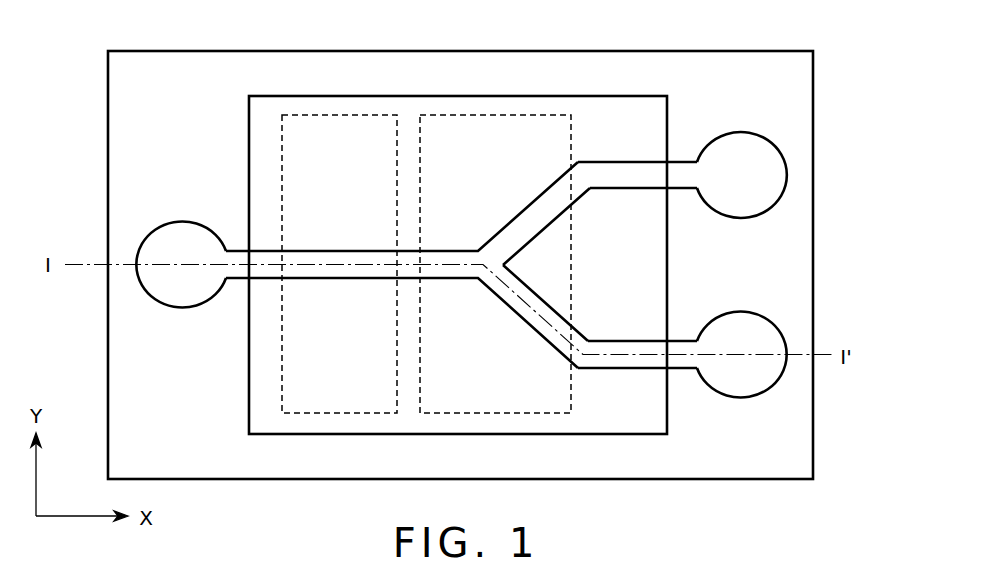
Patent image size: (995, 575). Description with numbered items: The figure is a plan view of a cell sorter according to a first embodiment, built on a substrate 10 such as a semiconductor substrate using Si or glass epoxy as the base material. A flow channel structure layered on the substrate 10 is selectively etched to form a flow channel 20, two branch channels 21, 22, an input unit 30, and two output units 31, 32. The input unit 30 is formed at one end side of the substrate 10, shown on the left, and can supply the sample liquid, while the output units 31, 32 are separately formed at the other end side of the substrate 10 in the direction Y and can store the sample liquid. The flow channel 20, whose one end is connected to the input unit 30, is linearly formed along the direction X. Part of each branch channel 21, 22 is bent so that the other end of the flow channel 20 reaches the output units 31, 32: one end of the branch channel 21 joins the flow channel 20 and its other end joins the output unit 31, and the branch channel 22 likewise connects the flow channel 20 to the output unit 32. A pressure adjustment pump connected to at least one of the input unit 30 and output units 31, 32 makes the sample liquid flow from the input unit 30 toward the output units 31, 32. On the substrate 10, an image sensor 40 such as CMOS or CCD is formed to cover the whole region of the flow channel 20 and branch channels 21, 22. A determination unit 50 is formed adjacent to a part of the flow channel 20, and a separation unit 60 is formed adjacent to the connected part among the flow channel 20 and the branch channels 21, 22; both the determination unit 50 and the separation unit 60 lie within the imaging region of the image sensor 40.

The substrate 10 is at (813, 445).
The flow channel 20 is at (262, 250).
The branch channel 21 is at (626, 162).
The branch channel 22 is at (626, 372).
The input unit 30 is at (168, 222).
The output unit 31 is at (751, 133).
The output unit 32 is at (740, 398).
The image sensor 40 is at (625, 96).
The determination unit 50 is at (372, 113).
The separation unit 60 is at (533, 113).